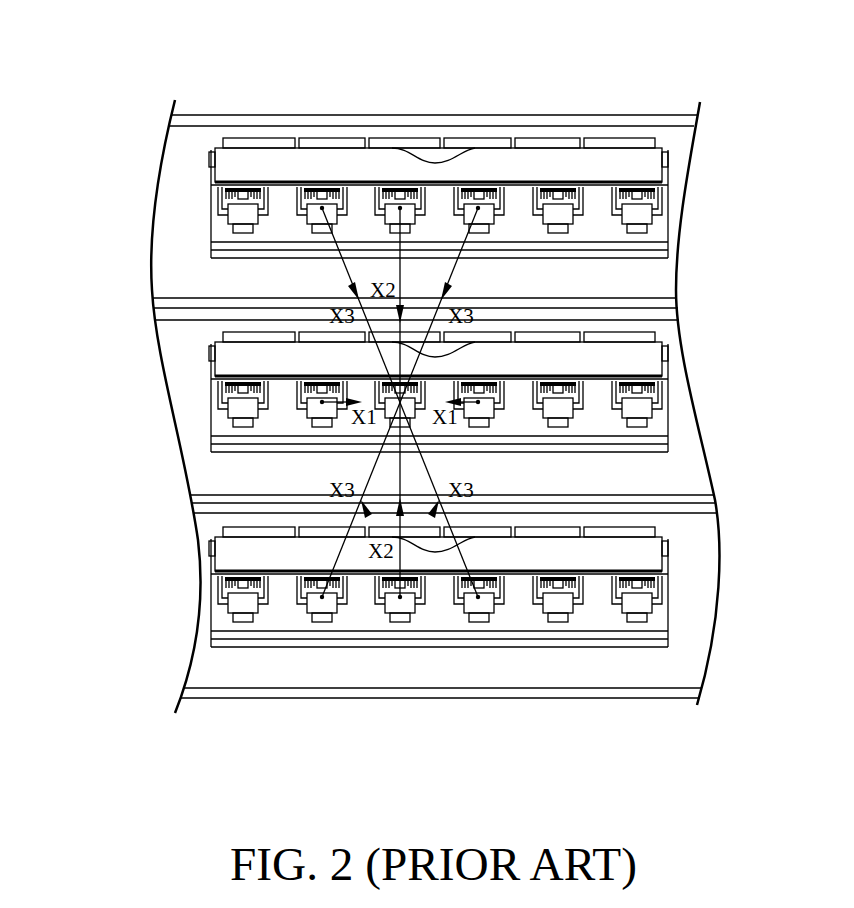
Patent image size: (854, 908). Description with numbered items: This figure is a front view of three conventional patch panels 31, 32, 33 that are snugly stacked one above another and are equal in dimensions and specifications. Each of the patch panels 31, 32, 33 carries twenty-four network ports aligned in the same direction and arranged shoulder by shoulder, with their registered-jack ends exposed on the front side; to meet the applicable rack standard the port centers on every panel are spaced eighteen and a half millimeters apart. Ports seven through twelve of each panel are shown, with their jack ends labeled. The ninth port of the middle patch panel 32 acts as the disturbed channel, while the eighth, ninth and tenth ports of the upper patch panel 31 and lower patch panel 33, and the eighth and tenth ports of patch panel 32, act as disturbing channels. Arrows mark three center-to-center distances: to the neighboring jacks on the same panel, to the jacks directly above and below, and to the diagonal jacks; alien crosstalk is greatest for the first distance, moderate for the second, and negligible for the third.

The patch panel 31 is at (164, 213).
The patch panel 32 is at (165, 450).
The patch panel 33 is at (163, 685).